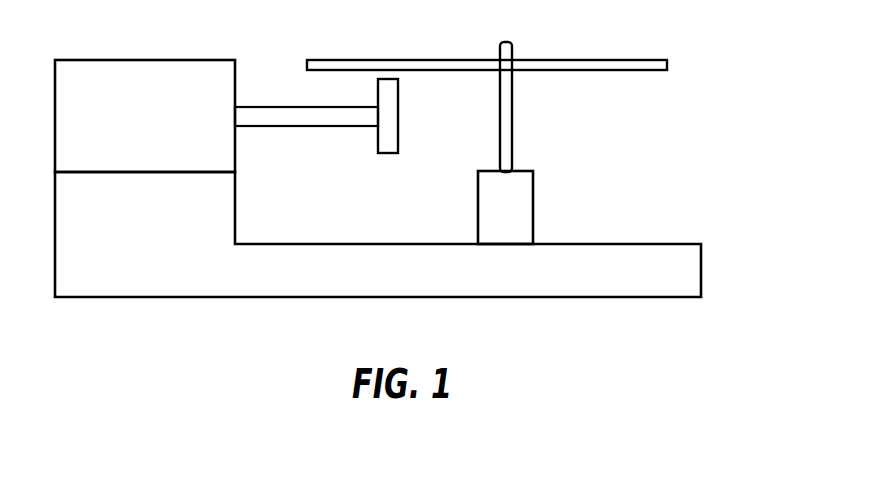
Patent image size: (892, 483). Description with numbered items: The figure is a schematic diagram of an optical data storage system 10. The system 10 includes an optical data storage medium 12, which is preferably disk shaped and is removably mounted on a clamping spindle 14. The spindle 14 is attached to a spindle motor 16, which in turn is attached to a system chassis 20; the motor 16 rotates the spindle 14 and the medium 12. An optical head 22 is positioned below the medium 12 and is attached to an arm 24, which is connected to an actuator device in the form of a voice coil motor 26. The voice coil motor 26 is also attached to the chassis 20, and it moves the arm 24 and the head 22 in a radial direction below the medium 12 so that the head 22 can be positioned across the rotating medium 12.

The optical data storage system 10 is at (122, 340).
The optical data storage medium 12 is at (618, 59).
The clamping spindle 14 is at (512, 119).
The spindle motor 16 is at (533, 206).
The system chassis 20 is at (626, 299).
The optical head 22 is at (398, 131).
The arm 24 is at (275, 103).
The voice coil motor 26 is at (187, 59).